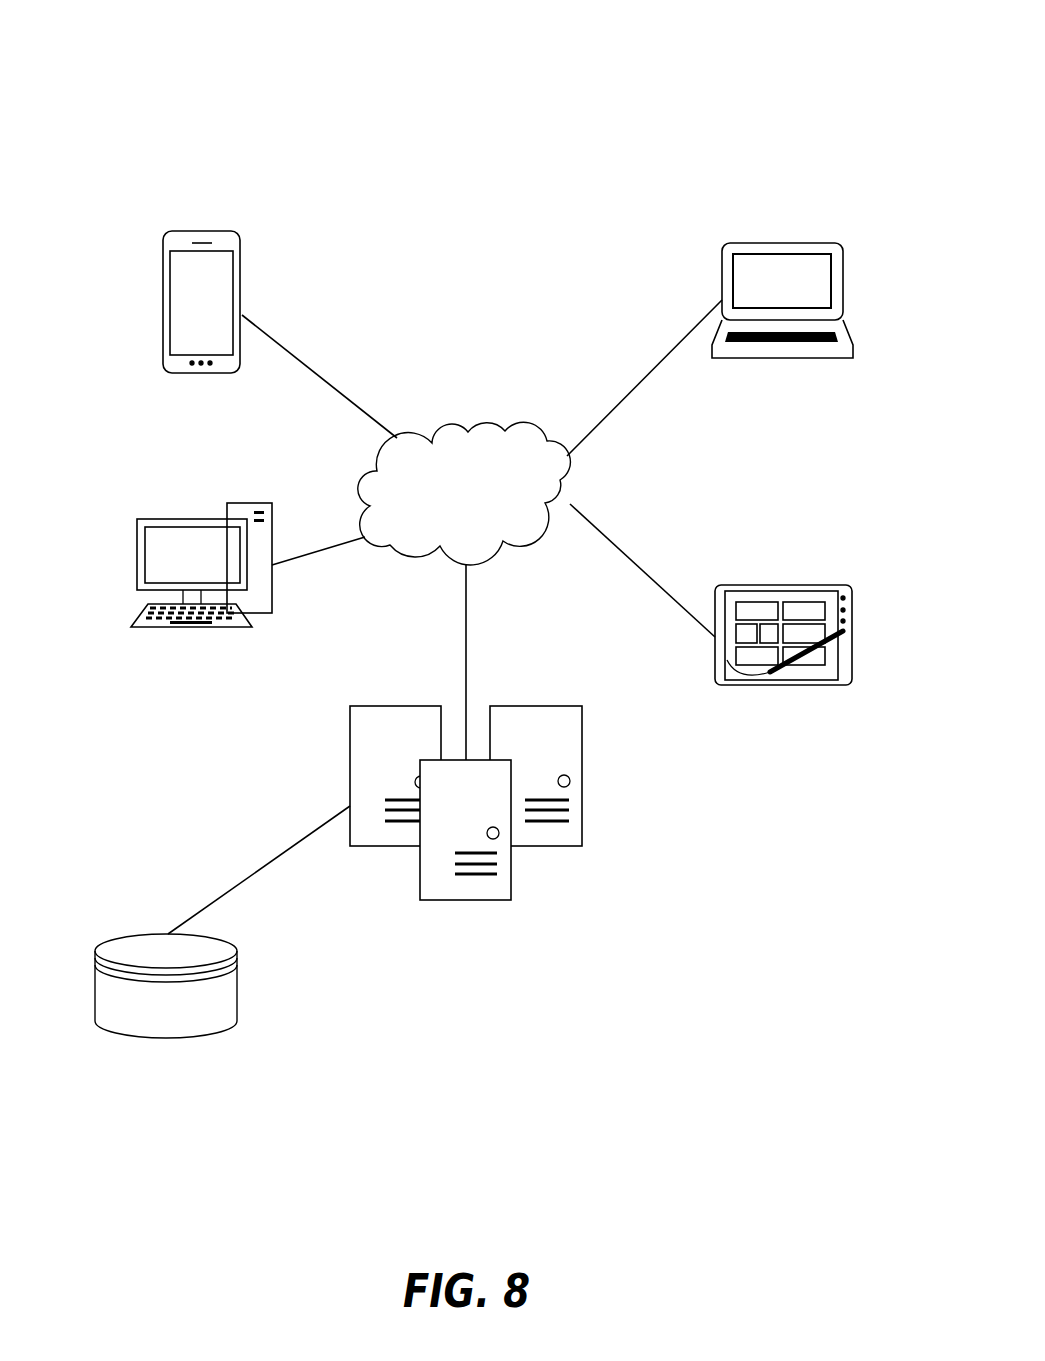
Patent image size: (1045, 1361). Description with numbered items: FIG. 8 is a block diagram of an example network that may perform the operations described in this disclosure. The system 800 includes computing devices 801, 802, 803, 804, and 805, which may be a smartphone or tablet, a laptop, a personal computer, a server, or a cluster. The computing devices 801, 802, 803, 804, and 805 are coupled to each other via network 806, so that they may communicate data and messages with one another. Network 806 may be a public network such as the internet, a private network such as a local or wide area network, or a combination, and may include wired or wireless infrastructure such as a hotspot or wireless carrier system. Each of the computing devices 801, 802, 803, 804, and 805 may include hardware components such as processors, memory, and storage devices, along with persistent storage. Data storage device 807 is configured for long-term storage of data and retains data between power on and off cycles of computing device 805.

The system 800 is at (147, 82).
The computing device 801 is at (240, 255).
The computing device 802 is at (843, 278).
The computing device 803 is at (272, 583).
The computing device 804 is at (852, 633).
The computing device 805 is at (582, 783).
The network 806 is at (464, 493).
The data storage device 807 is at (237, 993).